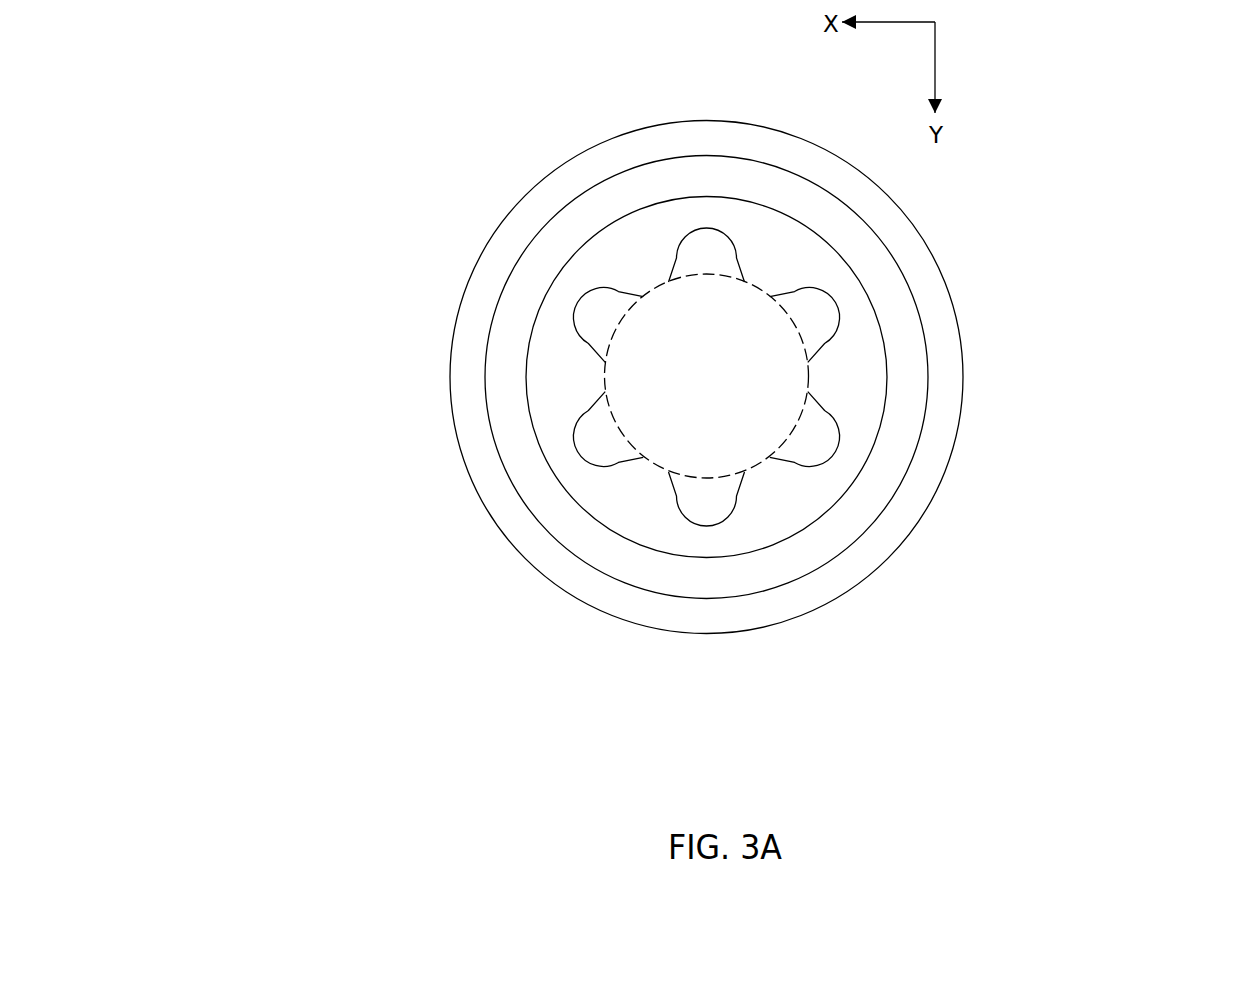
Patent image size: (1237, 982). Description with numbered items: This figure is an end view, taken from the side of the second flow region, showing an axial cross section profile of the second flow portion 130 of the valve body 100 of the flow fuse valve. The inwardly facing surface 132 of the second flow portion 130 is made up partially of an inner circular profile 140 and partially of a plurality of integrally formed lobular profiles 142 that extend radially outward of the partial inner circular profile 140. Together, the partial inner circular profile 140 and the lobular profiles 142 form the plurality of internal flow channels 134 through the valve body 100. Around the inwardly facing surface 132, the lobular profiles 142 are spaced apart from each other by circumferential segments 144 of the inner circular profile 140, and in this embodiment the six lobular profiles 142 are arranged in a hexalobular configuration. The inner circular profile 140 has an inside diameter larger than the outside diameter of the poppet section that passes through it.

The valve body 100 is at (507, 218).
The second flow portion 130 is at (569, 380).
The inwardly facing surface 132 is at (677, 496).
The internal flow channels 134 is at (603, 436).
The inner circular profile 140 is at (793, 432).
The lobular profiles 142 is at (830, 320).
The circumferential segments 144 is at (780, 353).